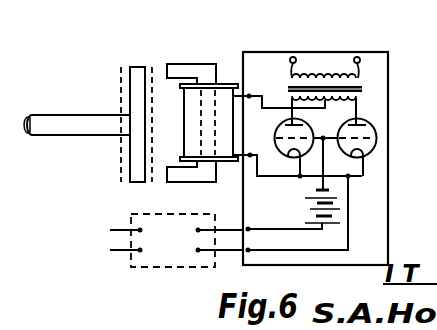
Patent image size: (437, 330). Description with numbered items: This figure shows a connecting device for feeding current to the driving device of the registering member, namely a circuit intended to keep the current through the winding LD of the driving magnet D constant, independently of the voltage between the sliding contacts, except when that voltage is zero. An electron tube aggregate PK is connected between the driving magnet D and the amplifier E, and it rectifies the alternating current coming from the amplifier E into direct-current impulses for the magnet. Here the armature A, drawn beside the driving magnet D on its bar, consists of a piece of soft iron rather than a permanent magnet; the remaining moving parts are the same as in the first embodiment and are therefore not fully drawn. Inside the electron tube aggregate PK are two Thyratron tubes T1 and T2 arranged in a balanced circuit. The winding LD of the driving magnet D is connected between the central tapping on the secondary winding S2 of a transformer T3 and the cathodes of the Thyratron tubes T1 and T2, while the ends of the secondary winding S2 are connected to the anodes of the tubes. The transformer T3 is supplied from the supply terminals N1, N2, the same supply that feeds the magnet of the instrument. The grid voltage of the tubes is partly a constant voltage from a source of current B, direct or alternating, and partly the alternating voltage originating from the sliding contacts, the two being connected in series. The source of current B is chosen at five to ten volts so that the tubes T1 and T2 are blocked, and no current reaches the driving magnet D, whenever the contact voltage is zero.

The armature A is at (138, 133).
The driving magnet D is at (200, 116).
The winding of the driving magnet LD is at (194, 155).
The supply terminal N1 is at (292, 57).
The supply terminal N2 is at (359, 57).
The transformer T3 is at (310, 80).
The secondary winding of the transformer S2 is at (358, 92).
The Thyratron tube T1 is at (282, 127).
The Thyratron tube T2 is at (368, 128).
The source of current B is at (315, 198).
The electron tube aggregate PK is at (372, 243).
The amplifier E is at (176, 240).